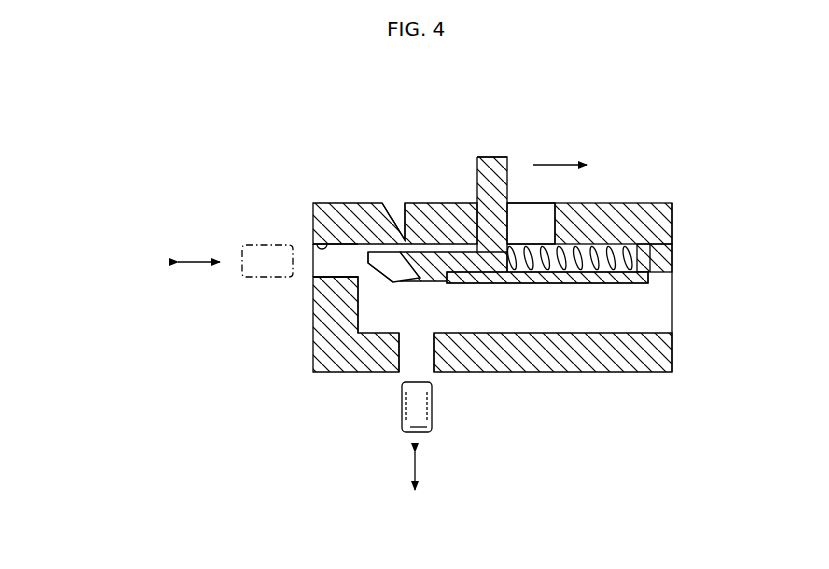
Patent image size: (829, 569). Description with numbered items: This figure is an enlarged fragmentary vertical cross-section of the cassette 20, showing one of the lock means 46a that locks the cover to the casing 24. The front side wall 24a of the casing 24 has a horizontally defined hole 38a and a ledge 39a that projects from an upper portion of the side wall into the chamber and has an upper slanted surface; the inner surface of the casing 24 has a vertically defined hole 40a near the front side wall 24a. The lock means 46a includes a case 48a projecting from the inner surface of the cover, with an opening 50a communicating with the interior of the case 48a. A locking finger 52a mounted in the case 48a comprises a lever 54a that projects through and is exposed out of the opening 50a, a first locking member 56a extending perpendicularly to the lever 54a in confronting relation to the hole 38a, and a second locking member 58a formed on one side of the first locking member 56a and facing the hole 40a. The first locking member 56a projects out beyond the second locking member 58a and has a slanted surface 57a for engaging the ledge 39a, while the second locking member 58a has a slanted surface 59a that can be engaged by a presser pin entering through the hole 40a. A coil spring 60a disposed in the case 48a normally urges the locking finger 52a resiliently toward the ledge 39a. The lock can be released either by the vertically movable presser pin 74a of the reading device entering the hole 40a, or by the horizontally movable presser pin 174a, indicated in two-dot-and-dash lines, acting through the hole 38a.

The casing 24 is at (582, 373).
The front side wall 24a is at (318, 308).
The cassette 20 is at (292, 333).
The hole 38a is at (312, 246).
The ledge 39a is at (384, 216).
The presser pin 174a is at (245, 263).
The lever 54a is at (478, 157).
The lock means 46a is at (497, 122).
The locking finger 52a is at (508, 154).
The second locking member 58a is at (423, 260).
The slanted surface 59a is at (414, 277).
The first locking member 56a is at (397, 279).
The slanted surface 57a is at (380, 265).
The opening 50a is at (592, 199).
The case 48a is at (570, 284).
The coil spring 60a is at (617, 283).
The hole 40a is at (432, 366).
The presser pin 74a is at (412, 418).